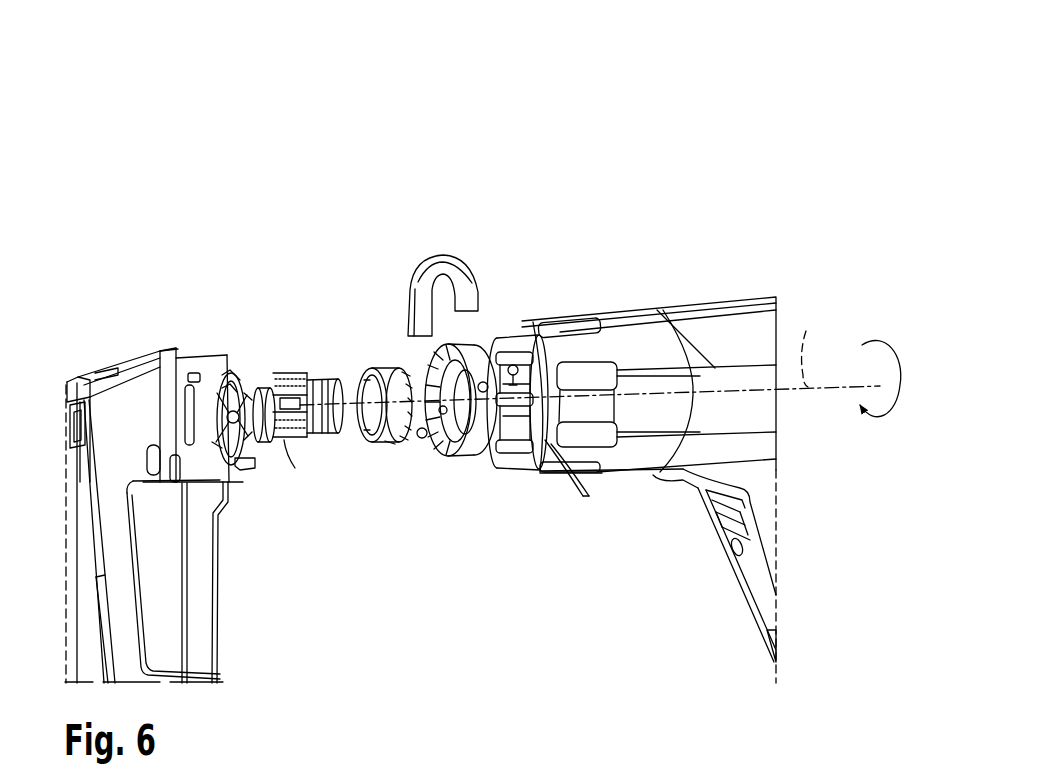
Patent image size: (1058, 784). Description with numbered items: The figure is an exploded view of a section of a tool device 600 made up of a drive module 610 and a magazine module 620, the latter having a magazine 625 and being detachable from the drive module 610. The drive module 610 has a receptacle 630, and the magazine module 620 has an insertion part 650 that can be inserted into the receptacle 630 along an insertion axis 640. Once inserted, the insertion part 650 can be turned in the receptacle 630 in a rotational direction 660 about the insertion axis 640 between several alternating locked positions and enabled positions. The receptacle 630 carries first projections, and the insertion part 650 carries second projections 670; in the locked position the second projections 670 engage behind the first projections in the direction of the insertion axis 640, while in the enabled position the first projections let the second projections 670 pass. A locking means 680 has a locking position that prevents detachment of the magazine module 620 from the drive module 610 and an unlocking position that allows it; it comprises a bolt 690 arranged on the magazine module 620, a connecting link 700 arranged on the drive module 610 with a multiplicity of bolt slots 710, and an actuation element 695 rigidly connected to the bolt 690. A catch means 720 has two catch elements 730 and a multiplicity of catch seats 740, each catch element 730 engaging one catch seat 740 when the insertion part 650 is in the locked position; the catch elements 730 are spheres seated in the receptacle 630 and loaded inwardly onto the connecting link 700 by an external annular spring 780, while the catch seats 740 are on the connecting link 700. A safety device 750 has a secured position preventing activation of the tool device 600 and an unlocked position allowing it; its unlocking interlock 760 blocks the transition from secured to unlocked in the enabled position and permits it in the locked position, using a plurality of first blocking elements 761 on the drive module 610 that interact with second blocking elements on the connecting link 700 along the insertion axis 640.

The tool device 600 is at (176, 108).
The drive module 610 is at (636, 226).
The magazine module 620 is at (103, 252).
The magazine 625 is at (146, 397).
The receptacle 630 is at (487, 346).
The insertion axis 640 is at (828, 350).
The insertion part 650 is at (322, 372).
The rotational direction 660 is at (884, 421).
The second projections 670 is at (287, 442).
The locking means 680 is at (431, 210).
The bolt 690 is at (238, 412).
The actuation element 695 is at (233, 410).
The connecting link 700 is at (390, 456).
The bolt slots 710 is at (365, 368).
The catch means 720 is at (463, 222).
The catch elements 730 is at (433, 450).
The catch seats 740 is at (397, 356).
The safety device 750 is at (553, 577).
The unlocking interlock 760 is at (533, 520).
The first blocking elements 761 is at (576, 480).
The annular spring 780 is at (463, 278).